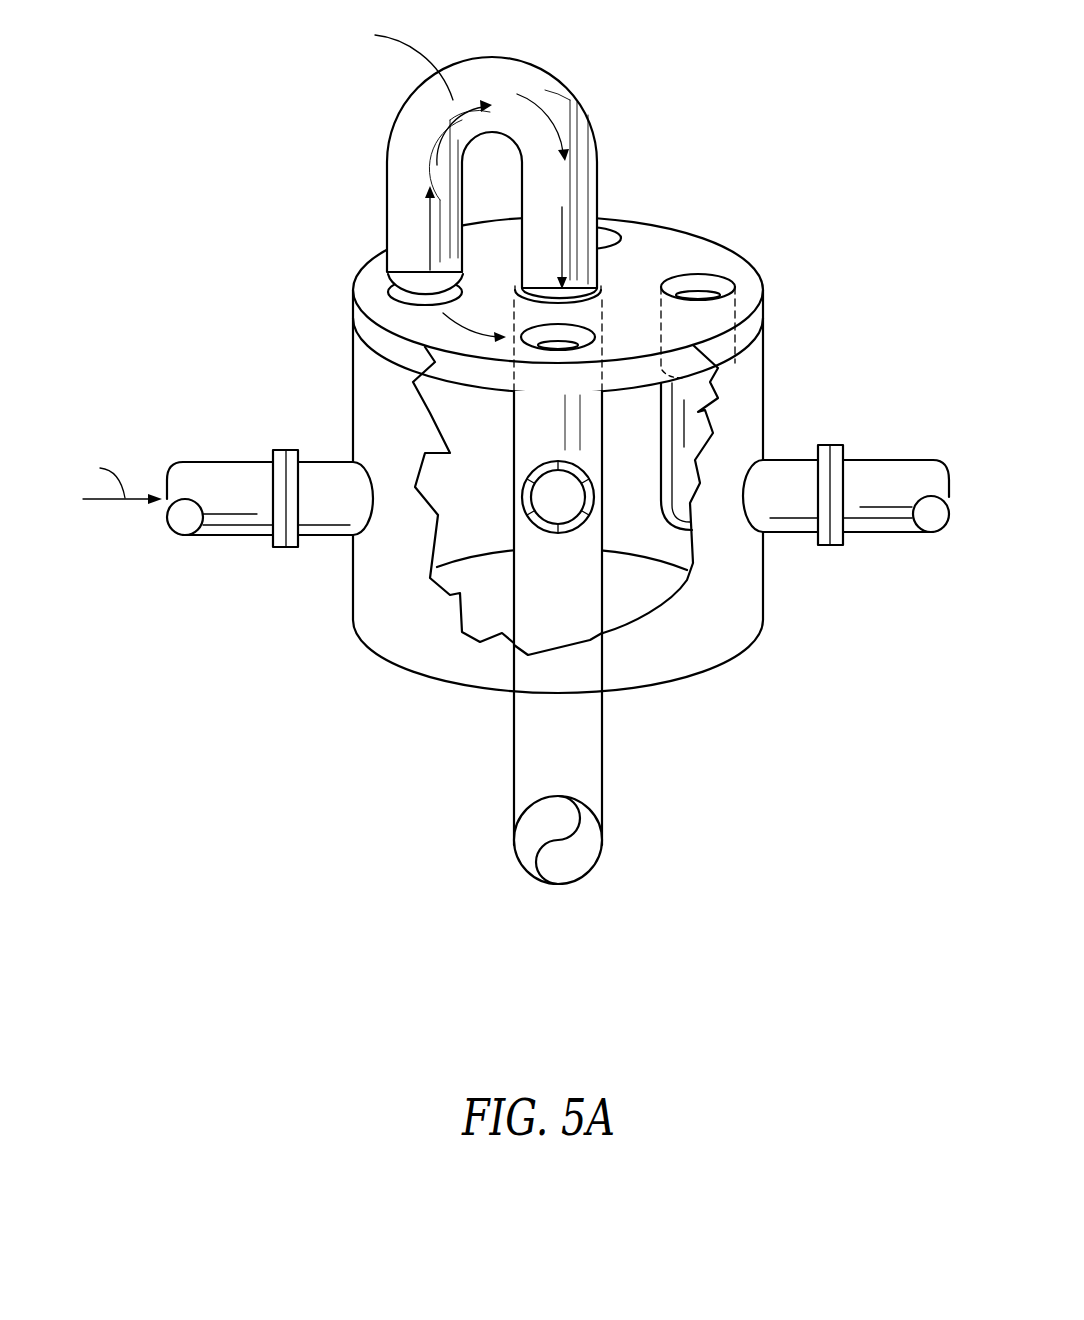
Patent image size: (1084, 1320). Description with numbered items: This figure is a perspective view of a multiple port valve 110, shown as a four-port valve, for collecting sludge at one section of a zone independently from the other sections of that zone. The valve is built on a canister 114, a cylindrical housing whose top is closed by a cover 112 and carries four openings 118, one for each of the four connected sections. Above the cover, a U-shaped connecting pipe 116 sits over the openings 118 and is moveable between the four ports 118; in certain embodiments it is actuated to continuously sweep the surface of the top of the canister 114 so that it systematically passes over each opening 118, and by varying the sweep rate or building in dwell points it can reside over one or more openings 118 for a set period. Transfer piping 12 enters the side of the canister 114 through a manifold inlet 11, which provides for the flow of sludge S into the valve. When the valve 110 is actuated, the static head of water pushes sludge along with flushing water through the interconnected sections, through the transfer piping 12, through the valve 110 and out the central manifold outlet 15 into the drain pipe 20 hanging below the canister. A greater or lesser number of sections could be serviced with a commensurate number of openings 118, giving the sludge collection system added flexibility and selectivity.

The multiple port valve 110 is at (513, 448).
The lid 112 is at (650, 235).
The canister 114 is at (745, 375).
The connecting pipe 116 is at (508, 88).
The ports 118 is at (700, 273).
The manifold inlets 11 is at (353, 453).
The transfer piping 12 is at (260, 538).
The manifold outlet 15 is at (603, 700).
The drain pipe 20 is at (517, 783).